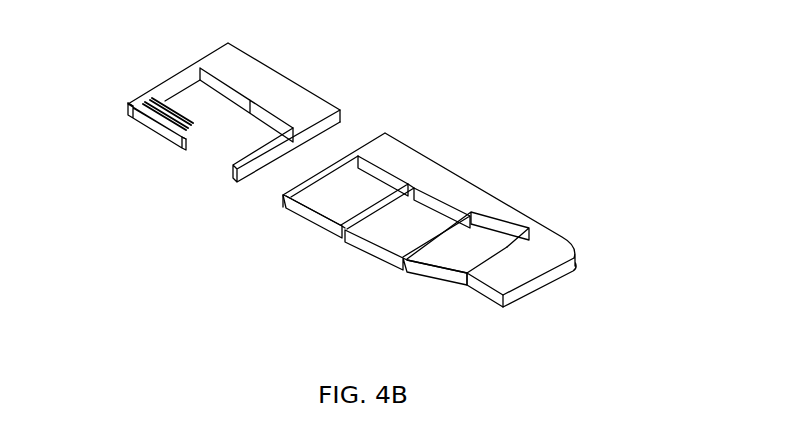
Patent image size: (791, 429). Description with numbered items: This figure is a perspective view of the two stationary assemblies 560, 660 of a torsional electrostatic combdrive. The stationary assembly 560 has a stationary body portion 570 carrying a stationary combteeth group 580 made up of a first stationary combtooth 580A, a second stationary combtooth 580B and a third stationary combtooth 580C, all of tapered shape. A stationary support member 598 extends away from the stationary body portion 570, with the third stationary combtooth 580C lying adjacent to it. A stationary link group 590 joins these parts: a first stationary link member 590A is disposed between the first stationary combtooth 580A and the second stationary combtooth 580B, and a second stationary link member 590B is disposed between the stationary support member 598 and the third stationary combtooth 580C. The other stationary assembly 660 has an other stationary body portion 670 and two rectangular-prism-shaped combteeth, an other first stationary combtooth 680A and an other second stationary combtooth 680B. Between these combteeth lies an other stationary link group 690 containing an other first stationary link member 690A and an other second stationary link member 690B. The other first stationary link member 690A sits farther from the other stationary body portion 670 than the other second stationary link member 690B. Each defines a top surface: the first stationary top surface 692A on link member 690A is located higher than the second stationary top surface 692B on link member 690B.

The stationary assembly 560 is at (594, 146).
The stationary body portion 570 is at (412, 167).
The stationary combteeth group 580 is at (320, 152).
The first stationary combtooth 580A is at (351, 188).
The second stationary combtooth 580B is at (415, 218).
The third stationary combtooth 580C is at (466, 245).
The stationary link group 590 is at (281, 230).
The first stationary link member 590A is at (311, 215).
The second stationary link member 590B is at (443, 265).
The stationary support member 598 is at (532, 275).
The other stationary assembly 660 is at (343, 41).
The other stationary body portion 670 is at (284, 95).
The other first stationary combtooth 680A is at (171, 66).
The other second stationary combtooth 680B is at (210, 160).
The other stationary link group 690 is at (154, 148).
The other first stationary link member 690A is at (131, 140).
The other second stationary link member 690B is at (196, 95).
The first stationary top surface 692A is at (140, 109).
The second stationary top surface 692B is at (163, 102).